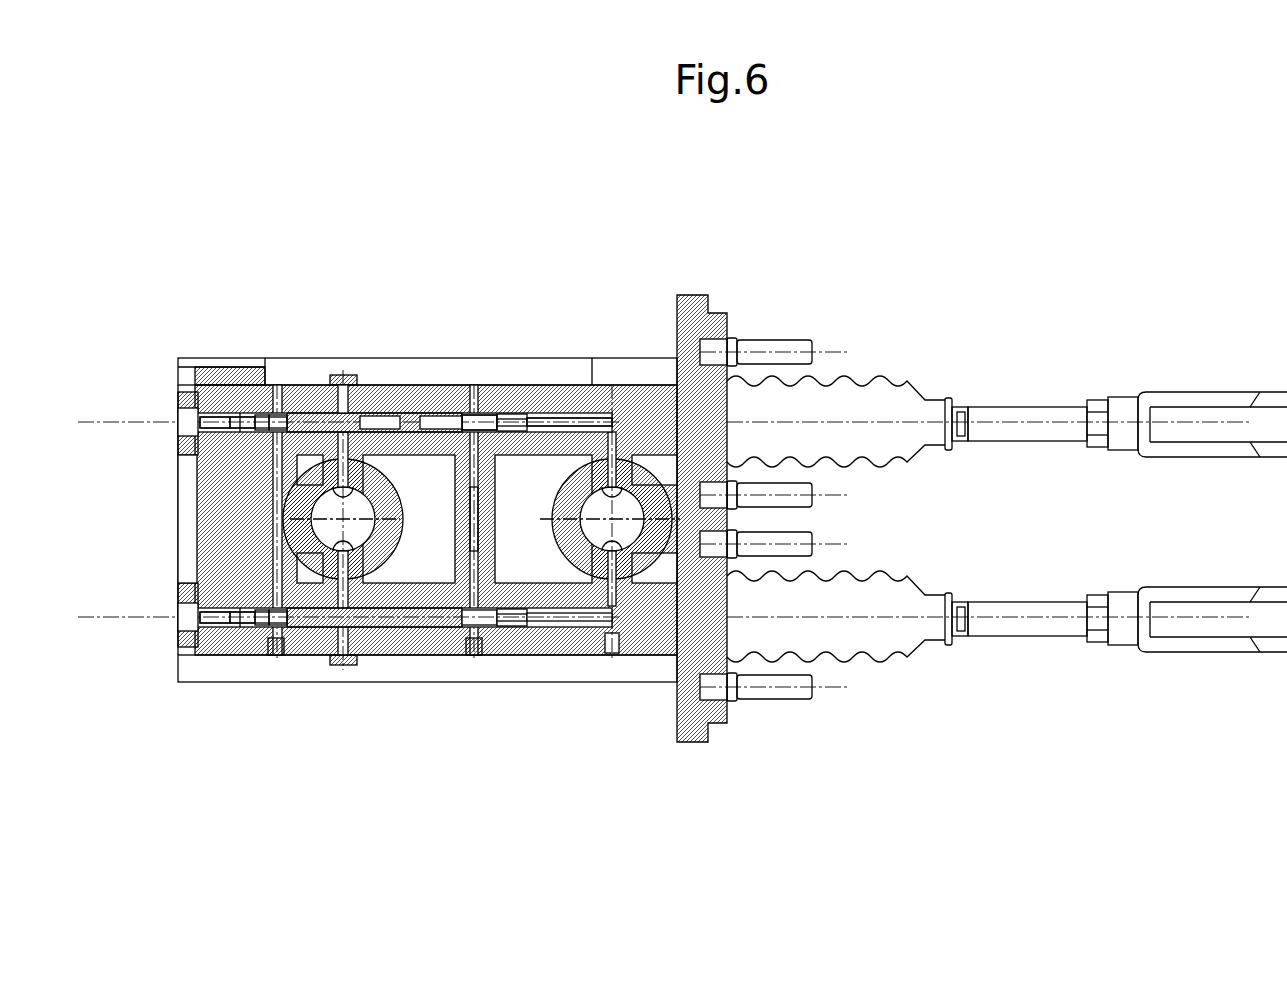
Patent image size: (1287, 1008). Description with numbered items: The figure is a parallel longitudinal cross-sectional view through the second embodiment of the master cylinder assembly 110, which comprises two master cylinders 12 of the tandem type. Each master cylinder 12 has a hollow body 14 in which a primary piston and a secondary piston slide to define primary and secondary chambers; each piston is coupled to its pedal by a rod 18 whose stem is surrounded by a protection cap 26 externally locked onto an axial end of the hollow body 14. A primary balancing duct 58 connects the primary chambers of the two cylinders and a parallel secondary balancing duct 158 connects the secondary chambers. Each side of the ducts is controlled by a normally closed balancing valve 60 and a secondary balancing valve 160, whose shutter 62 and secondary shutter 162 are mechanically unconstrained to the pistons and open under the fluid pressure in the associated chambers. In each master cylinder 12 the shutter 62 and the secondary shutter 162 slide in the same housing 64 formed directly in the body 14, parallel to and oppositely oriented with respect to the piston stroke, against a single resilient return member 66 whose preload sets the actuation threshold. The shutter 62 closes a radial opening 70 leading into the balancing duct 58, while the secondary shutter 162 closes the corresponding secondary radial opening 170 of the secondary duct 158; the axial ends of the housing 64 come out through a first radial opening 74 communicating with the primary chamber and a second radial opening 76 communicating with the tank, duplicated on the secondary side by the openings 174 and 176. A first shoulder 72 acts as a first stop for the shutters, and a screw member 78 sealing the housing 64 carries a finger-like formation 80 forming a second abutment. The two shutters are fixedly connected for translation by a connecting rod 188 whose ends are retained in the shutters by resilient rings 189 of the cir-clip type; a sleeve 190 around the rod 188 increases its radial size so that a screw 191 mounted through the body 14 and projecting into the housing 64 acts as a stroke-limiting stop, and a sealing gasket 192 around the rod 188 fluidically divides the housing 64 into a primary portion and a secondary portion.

The assembly 110 is at (872, 210).
The master cylinder 12 is at (700, 289).
The hollow body 14 is at (715, 327).
The rod 18 is at (1040, 418).
The protection cap 26 is at (852, 410).
The primary balancing duct 58 is at (476, 530).
The balancing valve 60 is at (516, 405).
The shutter 62 is at (492, 408).
The housing 64 is at (338, 465).
The resilient return member 66 is at (560, 395).
The radial opening 70 is at (487, 412).
The first shoulder 72 is at (590, 620).
The first radial opening 74 is at (475, 400).
The second radial opening 76 is at (614, 470).
The screw member 78 is at (180, 408).
The finger-like formation 80 is at (240, 628).
The secondary balancing duct 158 is at (275, 512).
The secondary balancing valve 160 is at (283, 410).
The secondary shutter 162 is at (236, 412).
The secondary radial opening 170 is at (256, 405).
The secondary first radial opening 174 is at (214, 418).
The secondary second radial opening 176 is at (405, 460).
The connecting rod 188 is at (444, 410).
The resilient rings 189 is at (277, 660).
The sleeve 190 is at (350, 372).
The screw 191 is at (343, 372).
The sealing gasket 192 is at (384, 405).